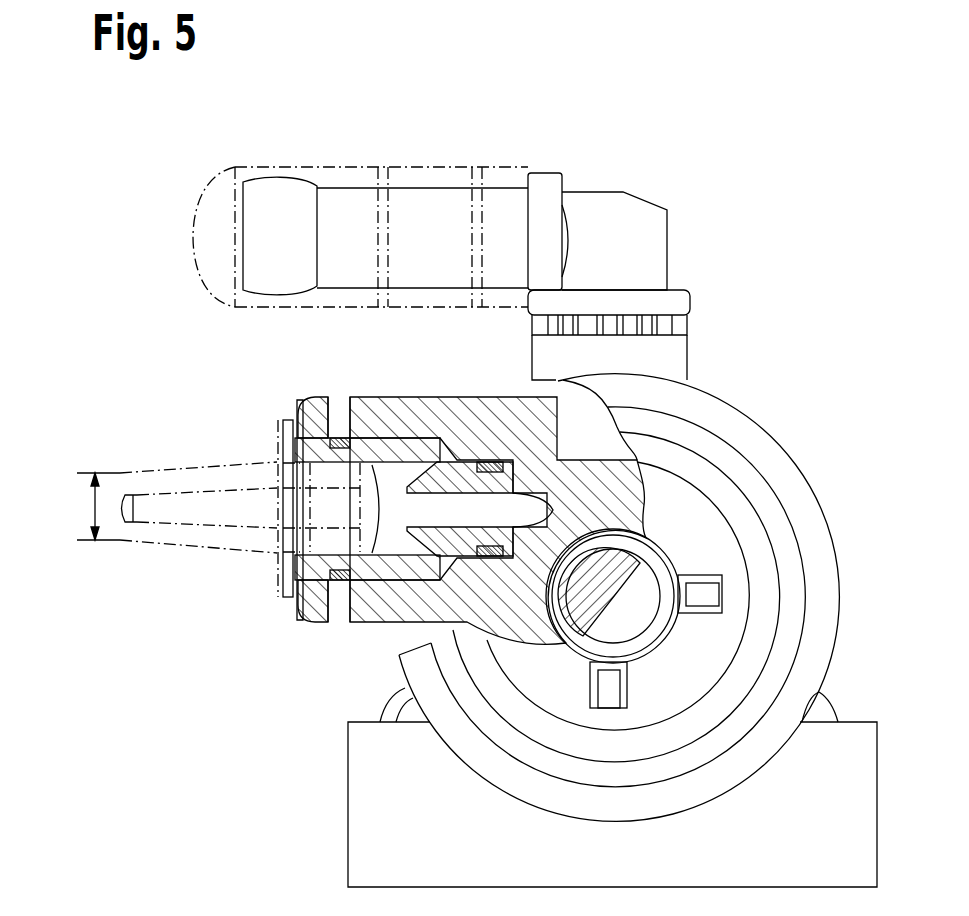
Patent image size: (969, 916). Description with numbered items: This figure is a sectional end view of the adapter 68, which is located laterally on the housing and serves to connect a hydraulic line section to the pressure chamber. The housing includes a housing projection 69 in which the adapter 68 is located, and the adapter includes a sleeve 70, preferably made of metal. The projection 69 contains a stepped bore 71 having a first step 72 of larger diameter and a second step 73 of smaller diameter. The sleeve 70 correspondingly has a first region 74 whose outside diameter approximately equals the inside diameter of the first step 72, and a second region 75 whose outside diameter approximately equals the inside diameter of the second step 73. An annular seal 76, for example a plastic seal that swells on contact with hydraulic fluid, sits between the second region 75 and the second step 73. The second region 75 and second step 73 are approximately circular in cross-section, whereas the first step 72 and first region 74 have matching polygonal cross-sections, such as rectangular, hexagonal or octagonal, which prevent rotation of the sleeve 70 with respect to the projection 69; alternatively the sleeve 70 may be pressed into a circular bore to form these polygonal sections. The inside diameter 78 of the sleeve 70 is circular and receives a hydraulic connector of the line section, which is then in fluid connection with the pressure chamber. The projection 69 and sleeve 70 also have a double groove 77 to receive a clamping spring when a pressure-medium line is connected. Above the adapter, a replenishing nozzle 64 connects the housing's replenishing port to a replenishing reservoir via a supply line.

The replenishing nozzle 64 is at (637, 205).
The adapter 68 is at (288, 677).
The housing projection 69 is at (413, 412).
The sleeve 70 is at (283, 572).
The stepped bore 71 is at (357, 572).
The first step 72 is at (362, 612).
The second step 73 is at (428, 660).
The first region 74 is at (307, 400).
The second region 75 is at (473, 461).
The annular seal 76 is at (500, 461).
The double groove 77 is at (338, 412).
The inside diameter 78 is at (92, 508).